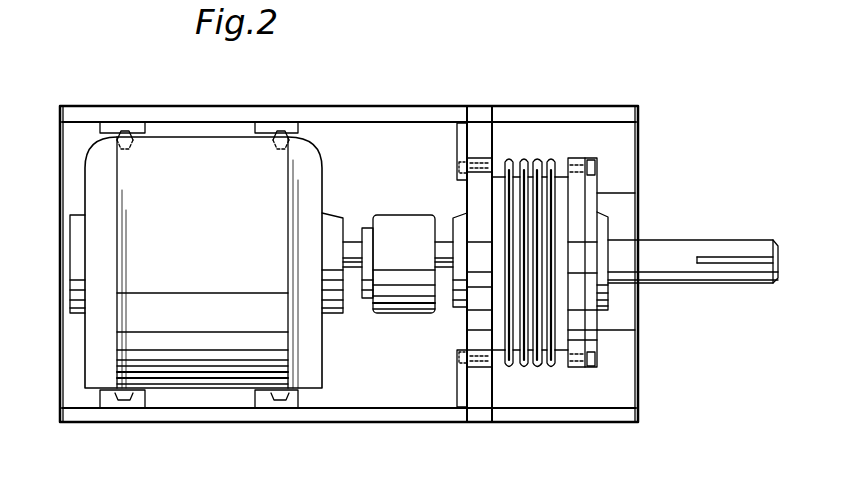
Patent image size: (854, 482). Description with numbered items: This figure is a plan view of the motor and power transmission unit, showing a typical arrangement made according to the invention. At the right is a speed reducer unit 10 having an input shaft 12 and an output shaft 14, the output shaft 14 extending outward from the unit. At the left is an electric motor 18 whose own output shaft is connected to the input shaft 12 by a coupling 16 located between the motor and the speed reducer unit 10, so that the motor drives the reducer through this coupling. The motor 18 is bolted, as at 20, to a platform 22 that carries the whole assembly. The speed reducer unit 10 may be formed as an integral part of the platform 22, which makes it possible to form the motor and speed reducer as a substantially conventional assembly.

The speed reducer unit 10 is at (546, 165).
The input shaft 12 is at (445, 247).
The output shaft 14 is at (706, 240).
The coupling 16 is at (383, 218).
The electric motor 18 is at (210, 140).
The bolts 20 is at (123, 131).
The platform 22 is at (332, 128).